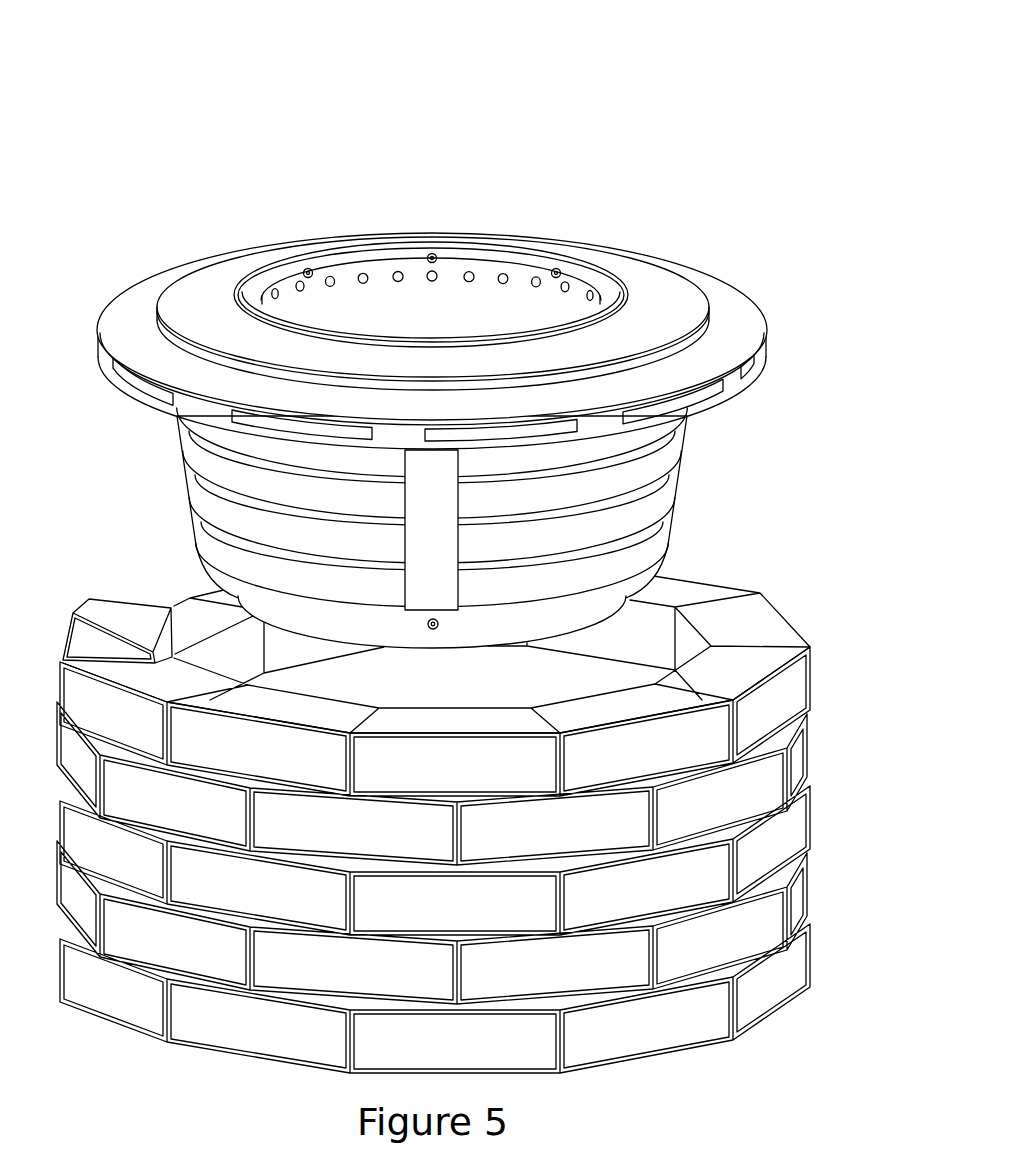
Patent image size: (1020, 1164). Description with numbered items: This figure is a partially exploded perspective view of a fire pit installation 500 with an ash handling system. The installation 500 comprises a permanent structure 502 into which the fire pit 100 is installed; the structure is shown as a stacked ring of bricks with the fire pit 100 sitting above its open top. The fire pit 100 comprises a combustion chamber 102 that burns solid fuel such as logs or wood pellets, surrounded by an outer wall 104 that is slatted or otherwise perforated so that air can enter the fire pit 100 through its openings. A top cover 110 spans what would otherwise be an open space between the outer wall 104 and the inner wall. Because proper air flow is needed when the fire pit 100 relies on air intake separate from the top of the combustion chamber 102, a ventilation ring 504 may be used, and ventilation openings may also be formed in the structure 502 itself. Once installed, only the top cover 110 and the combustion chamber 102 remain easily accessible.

The fire pit installation 500 is at (750, 70).
The fire pit 100 is at (600, 150).
The combustion chamber 102 is at (500, 205).
The outer wall 104 is at (688, 453).
The top cover 110 is at (205, 285).
The ventilation ring 504 is at (733, 310).
The permanent structure 502 is at (776, 625).